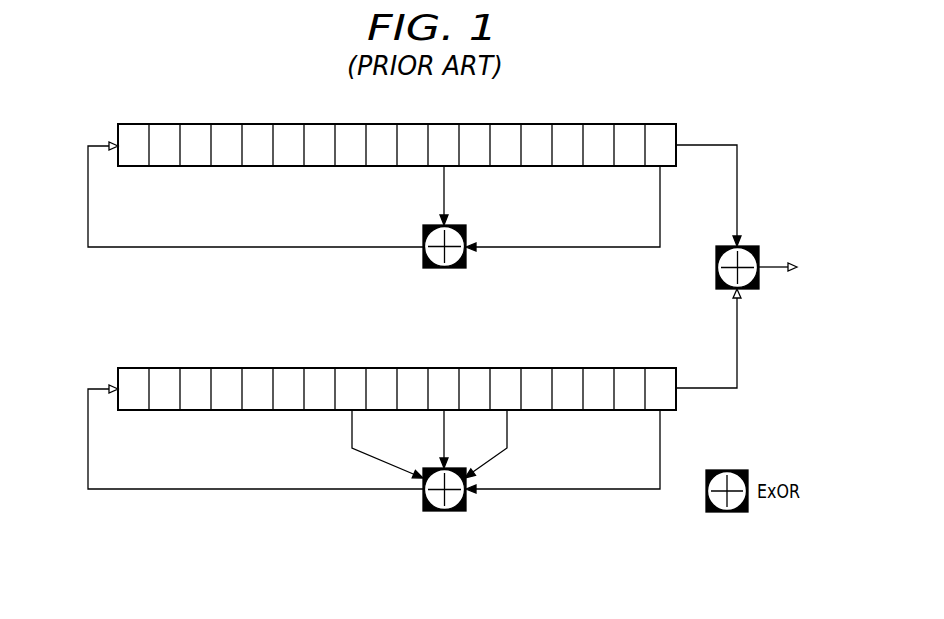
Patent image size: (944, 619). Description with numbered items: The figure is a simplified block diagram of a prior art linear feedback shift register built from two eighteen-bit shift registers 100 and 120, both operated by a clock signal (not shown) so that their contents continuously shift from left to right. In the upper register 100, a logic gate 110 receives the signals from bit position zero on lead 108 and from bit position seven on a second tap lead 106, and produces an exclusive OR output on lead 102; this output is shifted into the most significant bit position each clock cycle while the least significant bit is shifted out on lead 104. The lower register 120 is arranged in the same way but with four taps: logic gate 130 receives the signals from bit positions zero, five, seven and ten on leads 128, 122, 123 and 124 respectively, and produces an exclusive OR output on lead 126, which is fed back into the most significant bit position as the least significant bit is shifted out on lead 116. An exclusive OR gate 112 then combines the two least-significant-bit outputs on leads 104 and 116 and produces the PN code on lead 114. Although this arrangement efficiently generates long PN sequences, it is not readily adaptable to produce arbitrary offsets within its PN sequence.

The shift register 100 is at (238, 114).
The lead 102 is at (88, 198).
The lead 104 is at (703, 142).
The tap line from bit 7 of shift register 1 106 is at (444, 190).
The lead 108 is at (562, 248).
The logic gate 110 is at (446, 270).
The exclusive OR gate 112 is at (745, 289).
The lead 114 is at (772, 262).
The lead 116 is at (705, 390).
The shift register 120 is at (238, 356).
The lead 122 is at (508, 428).
The lead 123 is at (442, 422).
The lead 124 is at (350, 432).
The lead 126 is at (88, 440).
The lead 128 is at (562, 490).
The logic gate 130 is at (446, 512).